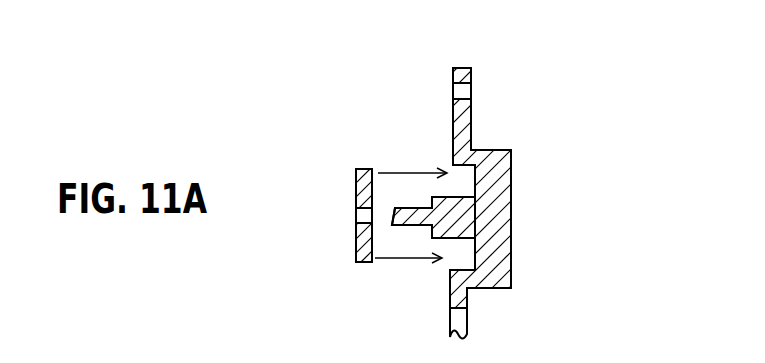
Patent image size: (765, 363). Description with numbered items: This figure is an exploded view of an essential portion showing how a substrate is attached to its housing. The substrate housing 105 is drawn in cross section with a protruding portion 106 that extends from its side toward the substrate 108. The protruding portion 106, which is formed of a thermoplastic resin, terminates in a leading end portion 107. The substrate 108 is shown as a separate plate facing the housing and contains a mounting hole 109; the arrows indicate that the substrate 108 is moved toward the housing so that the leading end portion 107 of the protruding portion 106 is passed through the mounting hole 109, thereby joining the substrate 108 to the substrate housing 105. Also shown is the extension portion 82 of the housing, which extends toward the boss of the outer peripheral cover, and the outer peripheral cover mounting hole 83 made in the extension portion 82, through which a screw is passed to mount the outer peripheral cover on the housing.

The extension portion 82 is at (471, 115).
The outer peripheral cover mounting hole 83 is at (456, 86).
The substrate housing 105 is at (508, 268).
The protruding portion 106 is at (462, 195).
The leading end portion 107 is at (416, 226).
The substrate 108 is at (356, 189).
The mounting hole 109 is at (356, 215).